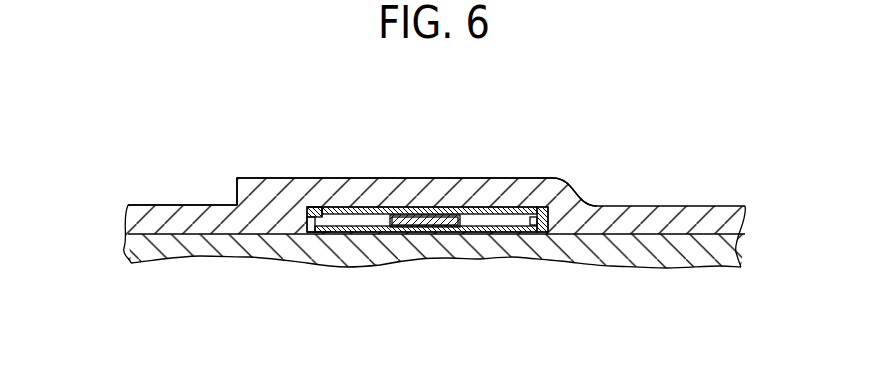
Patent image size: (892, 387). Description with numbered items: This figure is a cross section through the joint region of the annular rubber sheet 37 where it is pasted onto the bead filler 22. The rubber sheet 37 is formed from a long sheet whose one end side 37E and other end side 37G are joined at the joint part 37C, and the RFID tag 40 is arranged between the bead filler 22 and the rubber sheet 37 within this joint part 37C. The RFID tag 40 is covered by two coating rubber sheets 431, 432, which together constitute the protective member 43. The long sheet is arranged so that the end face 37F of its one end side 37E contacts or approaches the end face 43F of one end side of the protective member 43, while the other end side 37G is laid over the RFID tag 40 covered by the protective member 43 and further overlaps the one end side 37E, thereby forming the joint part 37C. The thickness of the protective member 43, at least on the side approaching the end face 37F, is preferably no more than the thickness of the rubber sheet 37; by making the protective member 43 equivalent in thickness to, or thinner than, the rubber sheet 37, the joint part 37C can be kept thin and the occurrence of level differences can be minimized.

The rubber sheet 37 is at (157, 206).
The other end side 37G is at (389, 162).
The joint part 37C is at (250, 143).
The one end side 37E is at (200, 193).
The end face 37F is at (318, 234).
The end face 43F is at (303, 210).
The protective member 43 is at (502, 168).
The coating rubber sheet 432 is at (542, 207).
The coating rubber sheet 431 is at (545, 228).
The RFID tag 40 is at (433, 217).
The bead filler 22 is at (563, 248).